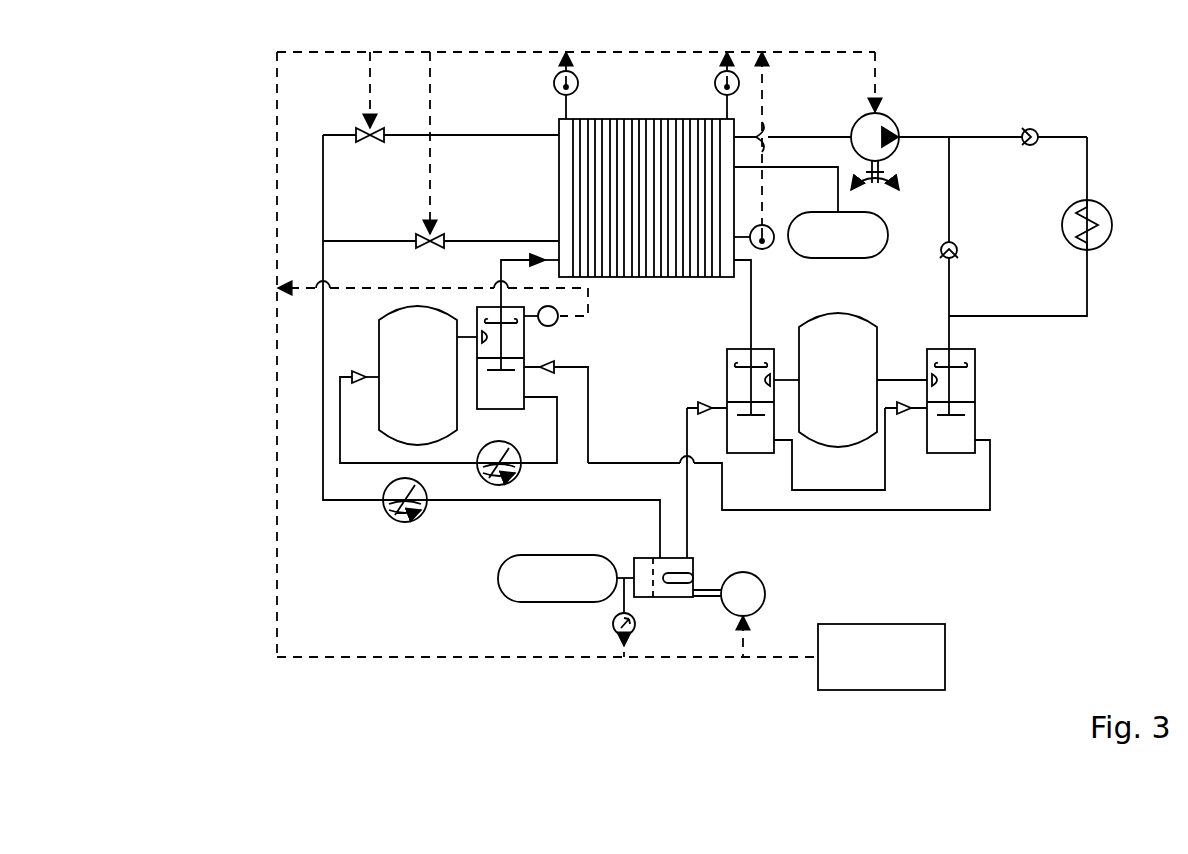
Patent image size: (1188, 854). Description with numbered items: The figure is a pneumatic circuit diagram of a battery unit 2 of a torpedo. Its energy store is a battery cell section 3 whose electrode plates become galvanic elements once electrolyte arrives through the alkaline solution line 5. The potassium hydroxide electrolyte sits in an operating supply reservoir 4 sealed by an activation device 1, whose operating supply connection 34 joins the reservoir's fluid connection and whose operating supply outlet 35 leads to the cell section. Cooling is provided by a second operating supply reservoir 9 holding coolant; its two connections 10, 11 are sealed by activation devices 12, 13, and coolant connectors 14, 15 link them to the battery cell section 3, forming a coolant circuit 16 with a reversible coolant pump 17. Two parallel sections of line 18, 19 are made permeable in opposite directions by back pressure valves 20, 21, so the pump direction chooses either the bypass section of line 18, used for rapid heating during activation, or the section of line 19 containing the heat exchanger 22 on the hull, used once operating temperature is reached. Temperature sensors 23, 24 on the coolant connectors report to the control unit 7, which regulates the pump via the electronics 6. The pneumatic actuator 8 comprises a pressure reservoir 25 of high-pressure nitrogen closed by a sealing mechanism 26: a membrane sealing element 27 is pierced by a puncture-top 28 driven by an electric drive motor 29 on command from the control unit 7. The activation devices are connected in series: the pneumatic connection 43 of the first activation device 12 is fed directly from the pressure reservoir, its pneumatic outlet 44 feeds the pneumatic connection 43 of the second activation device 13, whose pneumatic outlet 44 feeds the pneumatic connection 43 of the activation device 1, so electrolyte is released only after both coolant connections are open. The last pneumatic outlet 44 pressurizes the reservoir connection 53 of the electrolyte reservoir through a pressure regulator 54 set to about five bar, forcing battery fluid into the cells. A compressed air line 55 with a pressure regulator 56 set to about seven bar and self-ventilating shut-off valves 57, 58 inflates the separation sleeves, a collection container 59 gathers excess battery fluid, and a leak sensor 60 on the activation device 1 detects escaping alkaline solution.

The activation device 1 is at (548, 338).
The battery unit 2 is at (257, 524).
The battery cell section 3 is at (637, 110).
The operating supply reservoir 4 is at (418, 375).
The alkaline solution line 5 is at (555, 258).
The electronics 6 is at (277, 440).
The control unit 7 is at (881, 657).
The pneumatic actuator 8 is at (597, 622).
The operating supply reservoir 9 is at (838, 380).
The connection 10 is at (797, 375).
The connection 11 is at (878, 330).
The activation device 12 is at (712, 355).
The activation device 13 is at (985, 367).
The coolant connector 14 is at (745, 264).
The coolant connector 15 is at (740, 135).
The coolant circuit 16 is at (932, 135).
The coolant pump 17 is at (884, 117).
The section of line 18 is at (950, 188).
The section of line 19 is at (1090, 176).
The back pressure valve 20 is at (958, 250).
The back pressure valve 21 is at (1029, 128).
The heat exchanger 22 is at (1100, 229).
The temperature sensor 23 is at (720, 73).
The temperature sensor 24 is at (771, 230).
The pressure reservoir 25 is at (566, 578).
The sealing mechanism 26 is at (708, 553).
The sealing element 27 is at (653, 598).
The puncture-top 28 is at (680, 581).
The drive motor 29 is at (752, 606).
The operating supply connection 34 is at (477, 337).
The operating supply outlet 35 is at (497, 305).
The pneumatic connection 43 is at (525, 368).
The pneumatic outlet 44 is at (525, 398).
The reservoir connection 53 is at (379, 372).
The pressure regulator 54 is at (495, 485).
The compressed air line 55 is at (323, 487).
The pressure regulator 56 is at (402, 522).
The shut-off valve 57 is at (356, 133).
The shut-off valve 58 is at (420, 240).
The collection container 59 is at (811, 212).
The leak sensor 60 is at (566, 311).